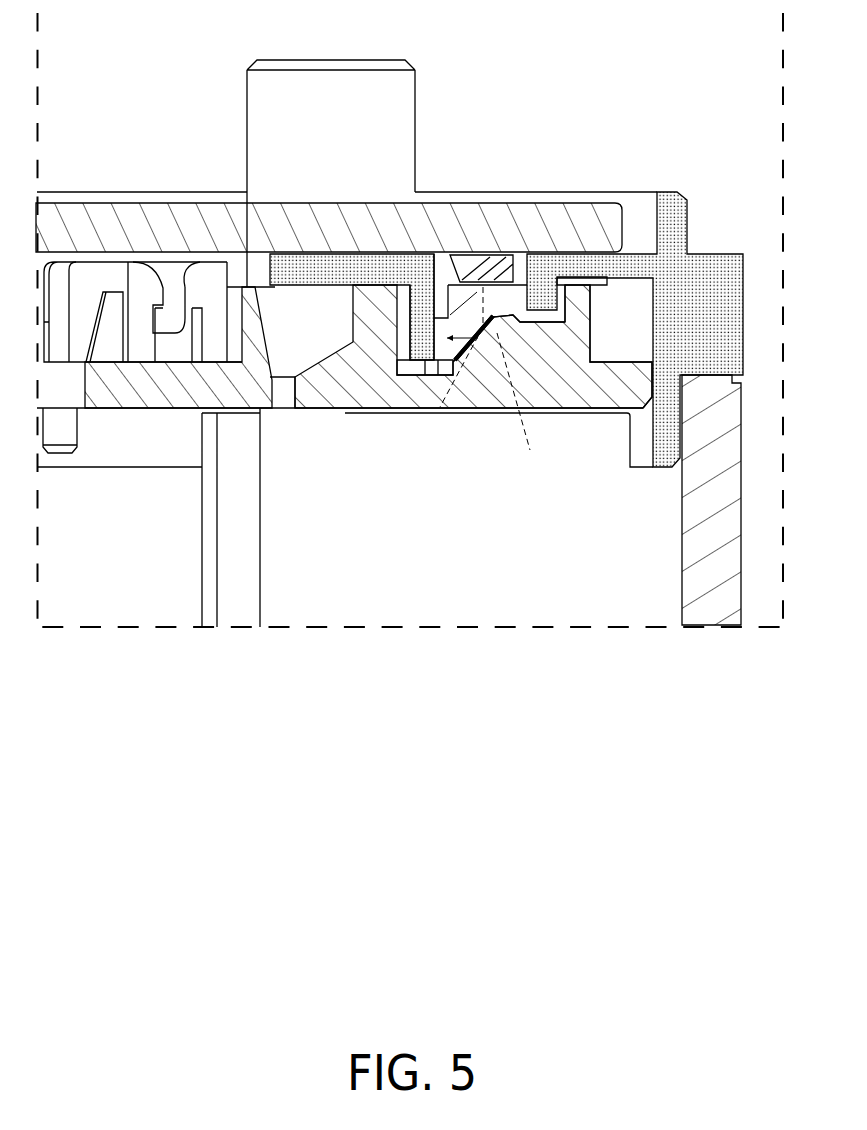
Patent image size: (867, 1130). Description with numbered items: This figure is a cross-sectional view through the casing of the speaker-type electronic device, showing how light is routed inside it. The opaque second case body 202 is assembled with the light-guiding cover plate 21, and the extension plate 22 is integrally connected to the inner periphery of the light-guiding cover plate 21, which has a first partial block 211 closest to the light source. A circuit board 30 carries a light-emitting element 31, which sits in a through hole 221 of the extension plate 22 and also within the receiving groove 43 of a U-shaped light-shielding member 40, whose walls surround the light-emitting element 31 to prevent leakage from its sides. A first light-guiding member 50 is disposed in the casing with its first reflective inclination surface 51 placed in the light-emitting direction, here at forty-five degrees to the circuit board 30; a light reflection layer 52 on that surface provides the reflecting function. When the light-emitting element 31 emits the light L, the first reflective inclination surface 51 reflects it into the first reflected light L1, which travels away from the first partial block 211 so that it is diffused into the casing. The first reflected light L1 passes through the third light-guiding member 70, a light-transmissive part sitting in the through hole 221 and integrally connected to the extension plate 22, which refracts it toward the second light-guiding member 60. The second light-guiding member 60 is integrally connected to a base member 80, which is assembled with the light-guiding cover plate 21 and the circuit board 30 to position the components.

The light-guiding cover plate 21 is at (741, 249).
The first partial block 211 is at (728, 333).
The second case body 202 is at (738, 453).
The extension plate 22 is at (340, 262).
The through hole 221 is at (447, 252).
The circuit board 30 is at (492, 215).
The light-emitting element 31 is at (505, 252).
The light-shielding member 40 is at (632, 252).
The receiving groove 43 is at (567, 410).
The first light-guiding member 50 is at (478, 385).
The first reflective inclination surface 51 is at (505, 308).
The light reflection layer 52 is at (474, 338).
The second light-guiding member 60 is at (362, 312).
The third light-guiding member 70 is at (452, 315).
The base member 80 is at (397, 385).
The light L is at (518, 405).
The first reflected light L1 is at (440, 407).